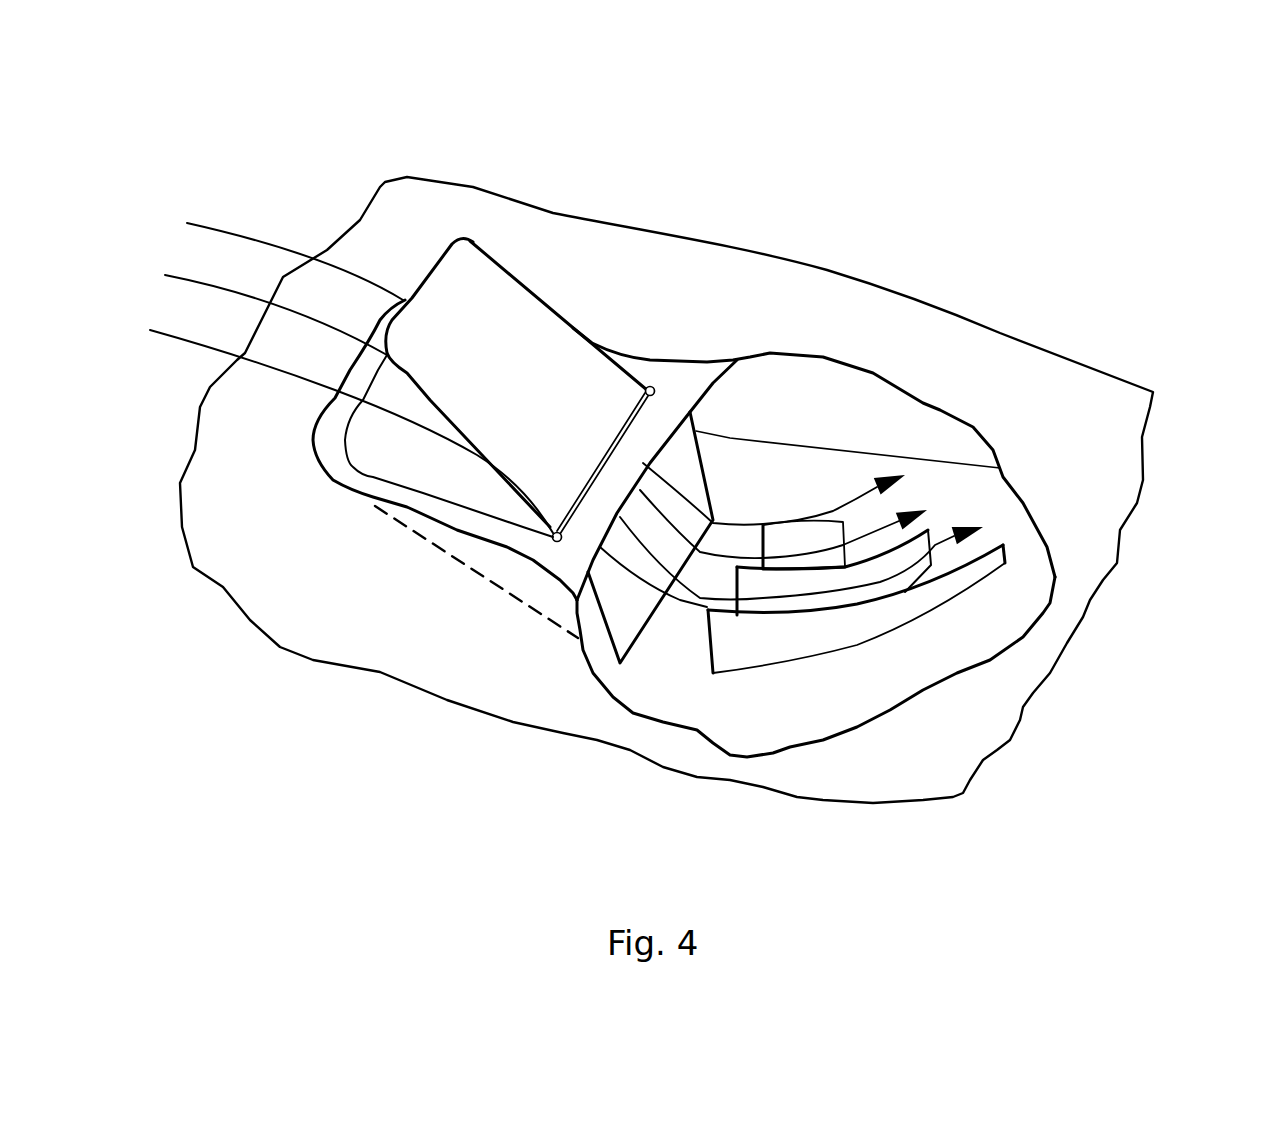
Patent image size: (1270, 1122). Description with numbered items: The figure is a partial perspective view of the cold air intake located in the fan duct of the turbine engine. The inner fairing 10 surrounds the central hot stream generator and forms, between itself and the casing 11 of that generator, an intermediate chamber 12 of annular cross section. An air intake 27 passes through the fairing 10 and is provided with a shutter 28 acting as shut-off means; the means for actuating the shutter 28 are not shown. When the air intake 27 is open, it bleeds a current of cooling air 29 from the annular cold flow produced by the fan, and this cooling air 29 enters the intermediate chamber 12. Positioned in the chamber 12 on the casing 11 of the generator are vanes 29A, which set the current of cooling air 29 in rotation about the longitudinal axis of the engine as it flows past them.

The inner fairing 10 is at (633, 267).
The casing 11 is at (783, 700).
The intermediate chamber 12 is at (778, 392).
The air intake 27 is at (490, 495).
The shutter 28 is at (492, 310).
The current of cooling air 29 is at (207, 343).
The vanes 29A is at (912, 563).